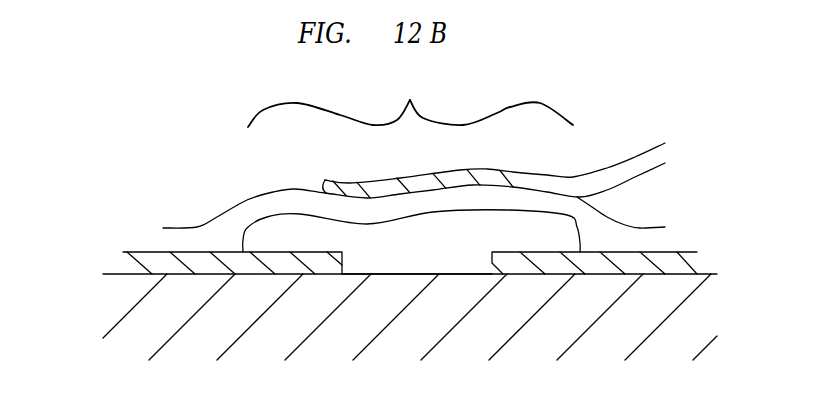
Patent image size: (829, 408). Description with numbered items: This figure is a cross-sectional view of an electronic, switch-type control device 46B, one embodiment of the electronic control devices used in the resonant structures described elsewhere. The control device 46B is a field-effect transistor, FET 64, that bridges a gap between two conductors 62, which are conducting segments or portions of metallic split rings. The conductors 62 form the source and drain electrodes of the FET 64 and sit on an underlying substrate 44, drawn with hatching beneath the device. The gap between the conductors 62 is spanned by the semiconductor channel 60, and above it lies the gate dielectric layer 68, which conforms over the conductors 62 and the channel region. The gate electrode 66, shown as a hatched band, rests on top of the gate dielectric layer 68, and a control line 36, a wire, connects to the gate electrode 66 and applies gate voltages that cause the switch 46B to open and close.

The electronic, switch-type, control device 46B is at (95, 183).
The FET 64 is at (410, 97).
The control line 36 is at (637, 160).
The gate electrode 66 is at (323, 179).
The gate dielectric layer 68 is at (213, 222).
The conductors 62 is at (121, 260).
The semiconductor channel 60 is at (436, 259).
The substrate 44 is at (436, 332).